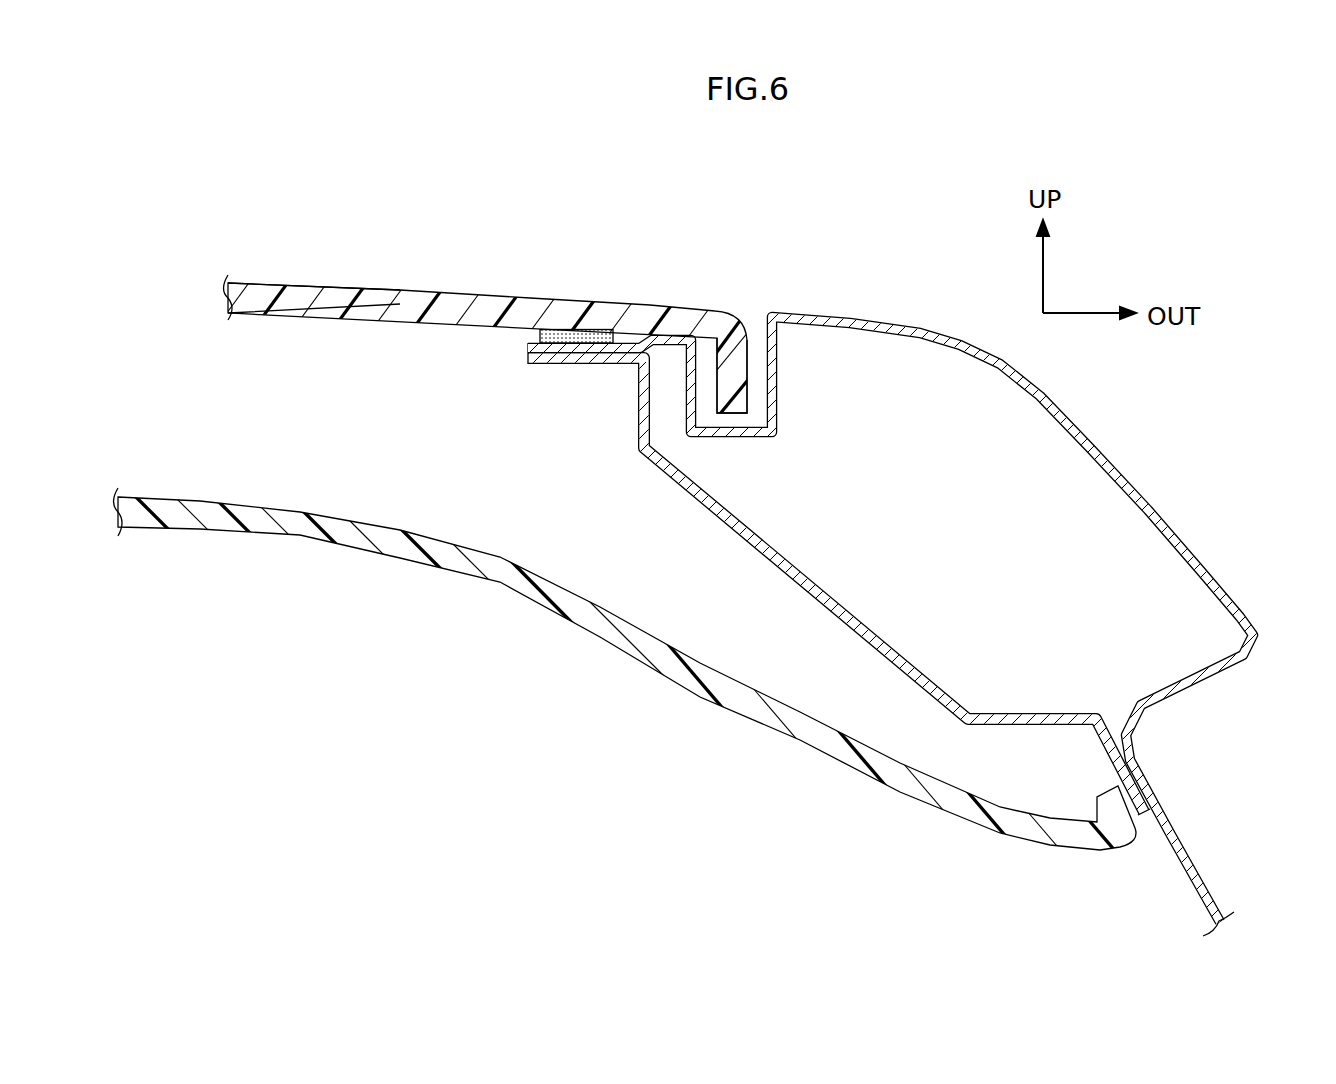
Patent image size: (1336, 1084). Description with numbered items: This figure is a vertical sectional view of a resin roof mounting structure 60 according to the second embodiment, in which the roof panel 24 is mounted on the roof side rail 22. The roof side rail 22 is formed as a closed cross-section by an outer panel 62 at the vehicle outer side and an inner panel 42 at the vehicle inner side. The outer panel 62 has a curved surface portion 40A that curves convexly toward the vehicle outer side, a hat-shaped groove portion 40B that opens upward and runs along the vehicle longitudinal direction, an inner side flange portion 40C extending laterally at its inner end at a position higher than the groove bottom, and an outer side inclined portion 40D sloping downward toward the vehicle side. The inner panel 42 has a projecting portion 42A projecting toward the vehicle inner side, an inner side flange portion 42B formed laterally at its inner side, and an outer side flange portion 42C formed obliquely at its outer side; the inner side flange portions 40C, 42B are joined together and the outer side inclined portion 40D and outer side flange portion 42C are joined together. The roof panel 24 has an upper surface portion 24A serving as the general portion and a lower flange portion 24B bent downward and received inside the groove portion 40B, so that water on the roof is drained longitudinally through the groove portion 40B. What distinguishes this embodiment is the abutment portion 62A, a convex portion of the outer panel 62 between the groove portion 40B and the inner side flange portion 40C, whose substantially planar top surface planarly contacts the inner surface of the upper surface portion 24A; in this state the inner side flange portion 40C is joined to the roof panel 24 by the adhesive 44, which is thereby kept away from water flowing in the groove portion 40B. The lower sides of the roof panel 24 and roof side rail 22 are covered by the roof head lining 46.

The roof side rail 22 is at (859, 588).
The roof panel 24 is at (544, 348).
The upper surface portion 24A is at (275, 283).
The lower flange portion 24B is at (735, 395).
The curved surface portion 40A is at (1030, 378).
The groove portion 40B is at (848, 404).
The inner side flange portion 40C is at (528, 341).
The outer side inclined portion 40D is at (1182, 830).
The inner panel 42 is at (839, 579).
The projecting portion 42A is at (750, 555).
The inner side flange portion 42B is at (565, 366).
The outer side flange portion 42C is at (1108, 745).
The adhesive 44 is at (590, 329).
The roof head lining 46 is at (608, 633).
The resin roof mounting structure 60 is at (937, 237).
The outer panel 62 is at (859, 588).
The abutment portion 62A is at (664, 343).